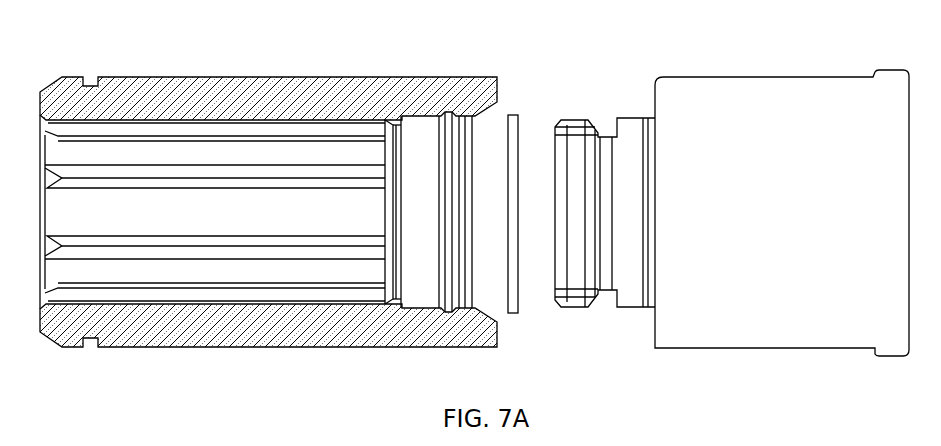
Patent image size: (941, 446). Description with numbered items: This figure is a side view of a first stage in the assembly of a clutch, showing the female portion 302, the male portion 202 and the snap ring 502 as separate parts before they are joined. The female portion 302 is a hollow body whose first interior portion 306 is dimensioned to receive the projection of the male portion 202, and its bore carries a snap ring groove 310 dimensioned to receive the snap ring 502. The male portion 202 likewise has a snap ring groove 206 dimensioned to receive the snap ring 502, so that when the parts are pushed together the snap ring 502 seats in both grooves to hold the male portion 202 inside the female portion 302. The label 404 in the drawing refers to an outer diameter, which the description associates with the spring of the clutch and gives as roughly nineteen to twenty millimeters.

The female portion 302 is at (277, 196).
The first interior portion 306 is at (287, 227).
The snap ring groove 310 is at (438, 75).
The snap ring 502 is at (484, 173).
The snap ring groove 206 is at (597, 178).
The outer diameter 404 is at (613, 226).
The male portion 202 is at (782, 192).